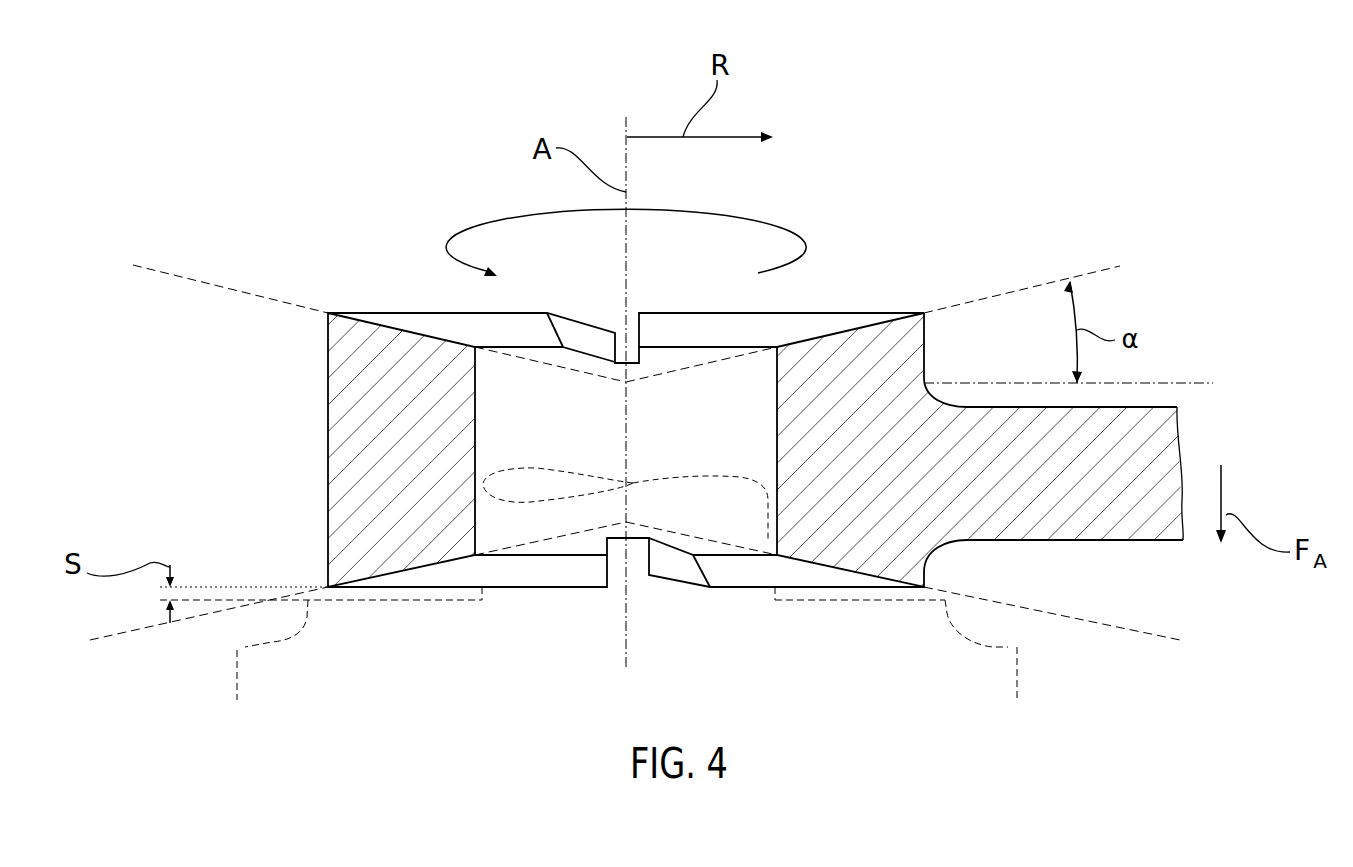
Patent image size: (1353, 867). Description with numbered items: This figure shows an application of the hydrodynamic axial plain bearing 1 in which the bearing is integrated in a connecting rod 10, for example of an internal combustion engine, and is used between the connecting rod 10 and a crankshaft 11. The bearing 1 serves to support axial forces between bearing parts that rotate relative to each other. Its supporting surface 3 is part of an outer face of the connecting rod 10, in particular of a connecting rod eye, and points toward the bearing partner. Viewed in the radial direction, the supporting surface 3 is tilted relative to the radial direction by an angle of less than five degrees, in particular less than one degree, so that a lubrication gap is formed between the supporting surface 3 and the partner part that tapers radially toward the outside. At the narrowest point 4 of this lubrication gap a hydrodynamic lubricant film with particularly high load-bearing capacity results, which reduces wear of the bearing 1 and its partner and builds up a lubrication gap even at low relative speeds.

The hydrodynamic axial plain bearing 1 is at (898, 285).
The supporting surface 3 is at (815, 326).
The narrowest point 4 is at (780, 222).
The connecting rod 10 is at (340, 463).
The crankshaft 11 is at (863, 628).